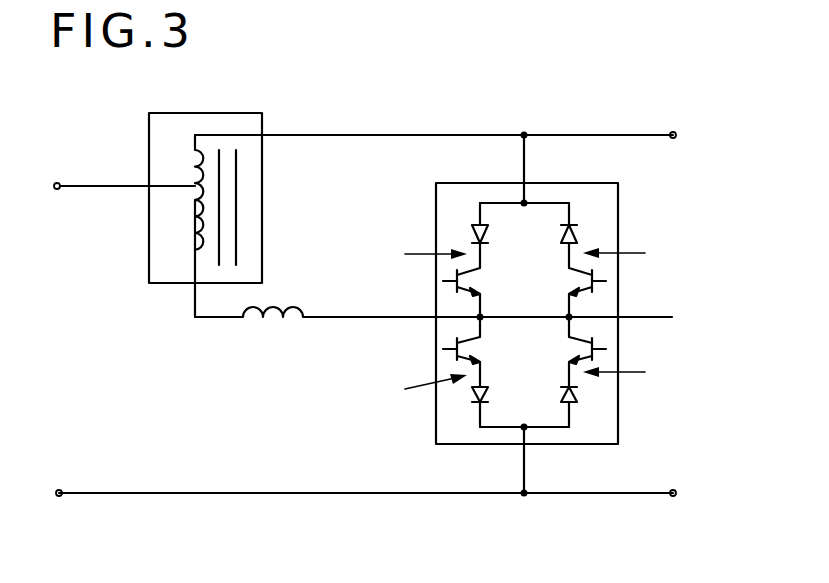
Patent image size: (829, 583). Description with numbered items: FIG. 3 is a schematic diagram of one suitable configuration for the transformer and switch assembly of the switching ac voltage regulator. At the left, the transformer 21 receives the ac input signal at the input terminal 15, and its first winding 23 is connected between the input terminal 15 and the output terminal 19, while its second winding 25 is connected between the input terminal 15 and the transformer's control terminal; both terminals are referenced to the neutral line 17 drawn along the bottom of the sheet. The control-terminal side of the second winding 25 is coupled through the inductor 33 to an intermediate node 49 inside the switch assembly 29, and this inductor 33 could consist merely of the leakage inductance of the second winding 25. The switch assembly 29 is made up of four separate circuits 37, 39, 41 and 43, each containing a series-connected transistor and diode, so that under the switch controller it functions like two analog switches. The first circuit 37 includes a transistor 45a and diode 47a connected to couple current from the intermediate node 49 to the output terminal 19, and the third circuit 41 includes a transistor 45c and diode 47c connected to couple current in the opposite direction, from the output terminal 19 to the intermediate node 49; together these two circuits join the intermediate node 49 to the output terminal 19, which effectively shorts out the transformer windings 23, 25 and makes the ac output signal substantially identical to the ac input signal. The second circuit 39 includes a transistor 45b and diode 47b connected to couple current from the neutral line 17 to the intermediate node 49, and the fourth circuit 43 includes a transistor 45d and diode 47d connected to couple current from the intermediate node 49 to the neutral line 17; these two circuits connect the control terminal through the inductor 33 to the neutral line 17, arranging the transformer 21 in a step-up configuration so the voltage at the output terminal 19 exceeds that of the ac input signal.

The input terminal 15 is at (59, 182).
The neutral line 17 is at (61, 489).
The output terminal 19 is at (676, 131).
The transformer 21 is at (197, 113).
The first winding 23 is at (197, 170).
The second winding 25 is at (197, 217).
The switch assembly 29 is at (493, 183).
The inductor 33 is at (270, 318).
The first circuit 37 is at (629, 254).
The second circuit 39 is at (629, 373).
The third circuit 41 is at (419, 254).
The fourth circuit 43 is at (421, 387).
The transistor 45a is at (592, 290).
The transistor 45b is at (592, 350).
The transistor 45c is at (457, 288).
The transistor 45d is at (455, 350).
The diode 47a is at (575, 225).
The diode 47b is at (575, 402).
The diode 47c is at (475, 225).
The diode 47d is at (470, 410).
The intermediate node 49 is at (508, 315).